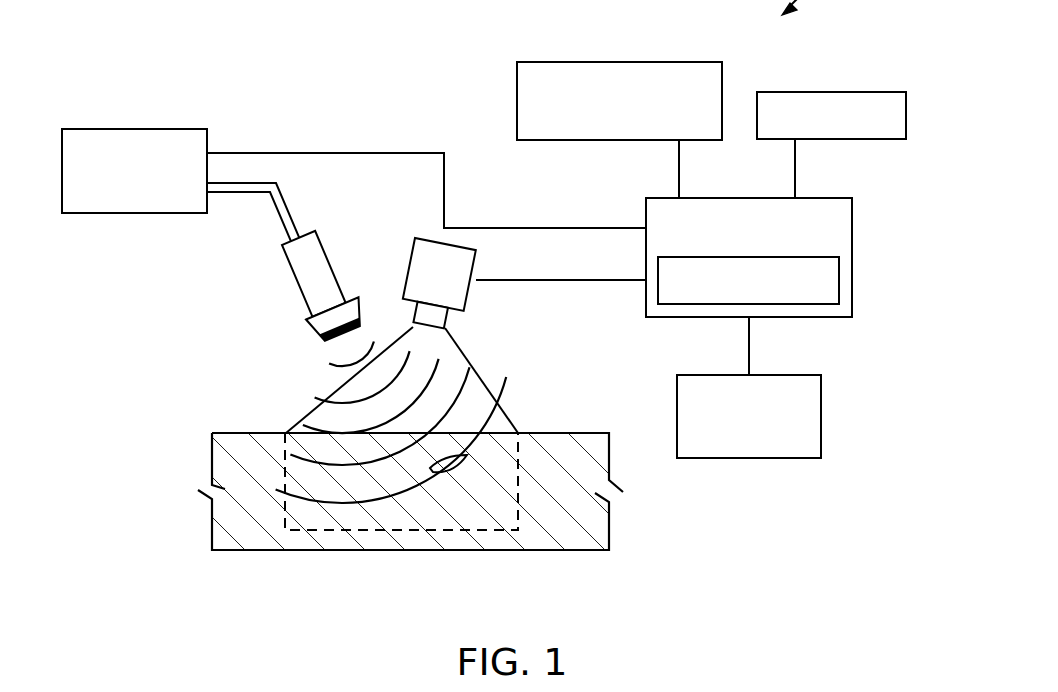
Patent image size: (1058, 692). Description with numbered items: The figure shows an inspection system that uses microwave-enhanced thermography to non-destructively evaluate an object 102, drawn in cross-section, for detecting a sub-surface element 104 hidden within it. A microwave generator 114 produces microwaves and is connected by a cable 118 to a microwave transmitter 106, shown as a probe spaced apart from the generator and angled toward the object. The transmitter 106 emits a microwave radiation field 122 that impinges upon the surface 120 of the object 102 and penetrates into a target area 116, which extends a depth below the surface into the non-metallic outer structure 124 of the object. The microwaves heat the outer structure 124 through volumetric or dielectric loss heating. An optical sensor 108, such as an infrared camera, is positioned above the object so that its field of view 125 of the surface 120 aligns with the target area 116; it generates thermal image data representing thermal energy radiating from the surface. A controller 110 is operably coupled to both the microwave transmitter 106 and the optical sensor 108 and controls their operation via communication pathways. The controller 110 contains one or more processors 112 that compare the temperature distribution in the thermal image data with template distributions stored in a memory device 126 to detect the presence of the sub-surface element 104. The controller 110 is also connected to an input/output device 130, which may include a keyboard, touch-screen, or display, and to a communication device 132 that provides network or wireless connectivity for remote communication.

The object 102 is at (406, 491).
The sub-surface element 104 is at (457, 483).
The microwave transmitter 106 is at (293, 273).
The optical sensor 108 is at (476, 258).
The controller 110 is at (792, 257).
The processors 112 is at (840, 278).
The microwave generator 114 is at (133, 128).
The target area 116 is at (377, 532).
The cable 118 is at (282, 191).
The surface 120 is at (228, 433).
The microwave radiation field 122 is at (340, 366).
The outer structure 124 is at (553, 522).
The field of view 125 is at (471, 356).
The memory device 126 is at (821, 415).
The input/output device 130 is at (830, 92).
The communication device 132 is at (517, 98).